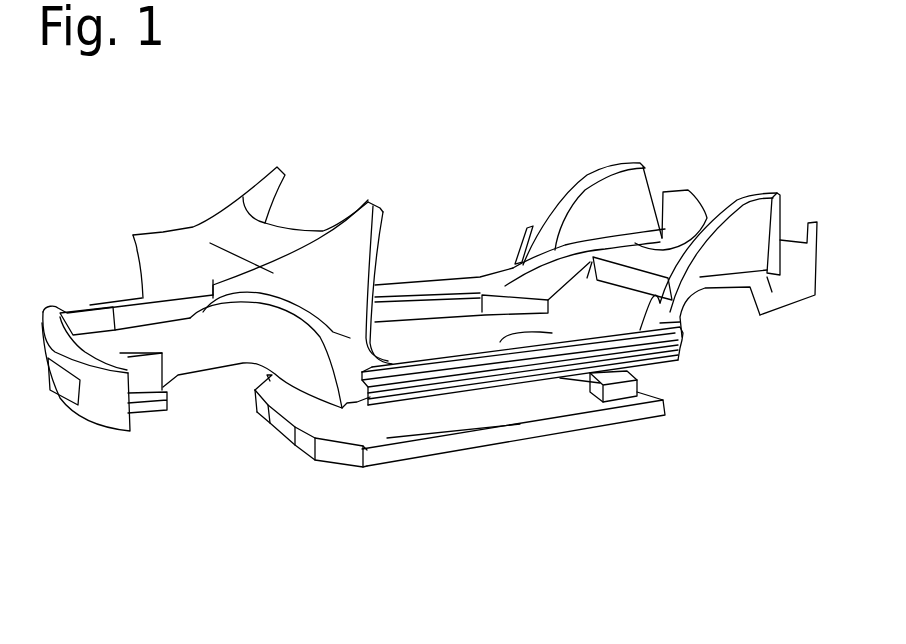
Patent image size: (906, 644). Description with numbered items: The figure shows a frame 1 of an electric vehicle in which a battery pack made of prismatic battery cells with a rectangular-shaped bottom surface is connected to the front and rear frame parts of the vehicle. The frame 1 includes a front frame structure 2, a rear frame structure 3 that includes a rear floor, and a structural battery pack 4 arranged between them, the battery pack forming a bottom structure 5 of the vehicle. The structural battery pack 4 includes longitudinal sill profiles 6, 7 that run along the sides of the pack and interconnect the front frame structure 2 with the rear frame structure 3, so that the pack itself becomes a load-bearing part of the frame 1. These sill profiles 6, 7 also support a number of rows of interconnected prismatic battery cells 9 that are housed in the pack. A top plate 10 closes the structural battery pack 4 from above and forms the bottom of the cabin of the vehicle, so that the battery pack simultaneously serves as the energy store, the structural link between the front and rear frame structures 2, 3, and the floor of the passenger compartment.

The frame 1 is at (107, 172).
The front frame structure 2 is at (195, 365).
The rear frame structure 3 is at (650, 262).
The structural battery pack 4 is at (687, 403).
The bottom structure 5 is at (441, 333).
The longitudinal sill profile 6 is at (471, 286).
The longitudinal sill profile 7 is at (673, 347).
The prismatic battery cells 9 is at (510, 437).
The top plate 10 is at (387, 437).